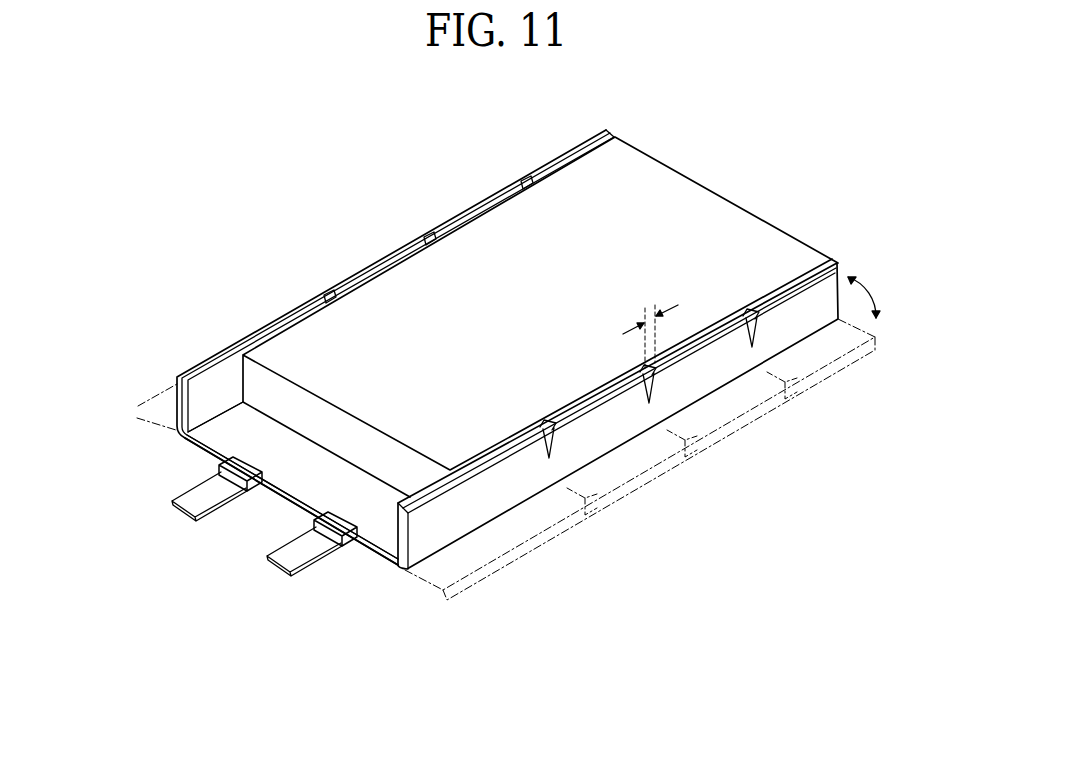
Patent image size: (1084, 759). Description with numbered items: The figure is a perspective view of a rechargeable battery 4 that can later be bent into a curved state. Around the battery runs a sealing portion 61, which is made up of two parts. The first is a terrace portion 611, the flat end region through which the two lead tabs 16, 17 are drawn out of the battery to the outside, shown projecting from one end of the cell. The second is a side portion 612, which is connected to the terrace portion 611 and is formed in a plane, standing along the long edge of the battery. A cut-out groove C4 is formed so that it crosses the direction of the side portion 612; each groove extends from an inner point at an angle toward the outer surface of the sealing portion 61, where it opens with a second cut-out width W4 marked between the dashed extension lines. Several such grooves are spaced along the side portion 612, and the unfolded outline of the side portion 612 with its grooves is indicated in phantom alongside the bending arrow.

The rechargeable battery 4 is at (378, 175).
The lead tab 16 is at (195, 503).
The lead tab 17 is at (292, 557).
The sealing portion 61 is at (385, 689).
The terrace portion 611 is at (368, 500).
The side portion 612 is at (433, 517).
The second cut-out width W4 is at (650, 322).
The cut-out groove C4 is at (655, 378).